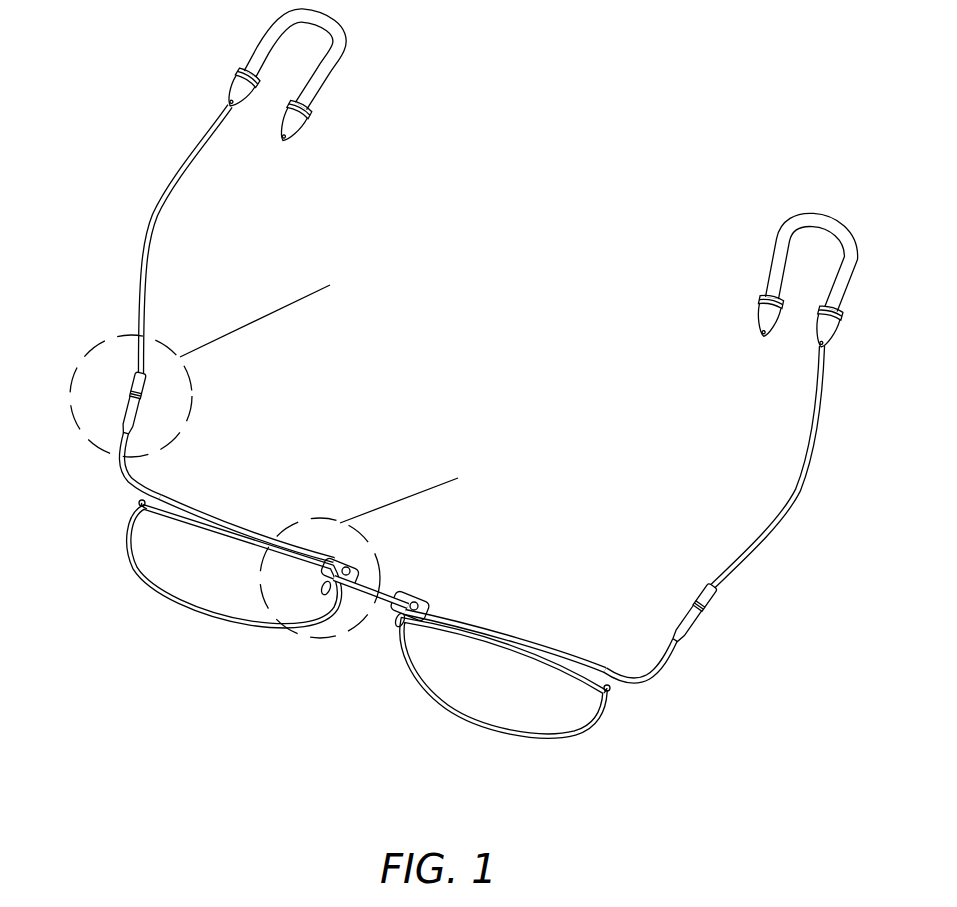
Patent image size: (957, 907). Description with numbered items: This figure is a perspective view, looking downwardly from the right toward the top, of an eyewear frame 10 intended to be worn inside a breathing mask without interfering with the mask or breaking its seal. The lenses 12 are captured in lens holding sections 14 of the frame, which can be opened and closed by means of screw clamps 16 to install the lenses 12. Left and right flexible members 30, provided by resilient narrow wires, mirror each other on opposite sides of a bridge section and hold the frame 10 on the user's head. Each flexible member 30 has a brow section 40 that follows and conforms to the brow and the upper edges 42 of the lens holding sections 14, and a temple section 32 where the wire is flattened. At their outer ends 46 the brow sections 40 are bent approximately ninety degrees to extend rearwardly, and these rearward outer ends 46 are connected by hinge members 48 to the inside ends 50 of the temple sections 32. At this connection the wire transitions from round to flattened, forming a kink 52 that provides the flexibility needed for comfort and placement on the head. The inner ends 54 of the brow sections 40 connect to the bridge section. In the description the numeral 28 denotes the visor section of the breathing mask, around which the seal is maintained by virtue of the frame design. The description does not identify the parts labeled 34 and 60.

The eyewear frame 10 is at (457, 403).
The lenses 12 is at (370, 645).
The lens holding sections 14 is at (370, 645).
The screw clamps 16 is at (133, 509).
The visor section 28 is at (378, 599).
The flexible members 30 is at (473, 346).
The temple sections 32 is at (147, 248).
The hinge pin 34 is at (378, 578).
The brow sections 40 is at (394, 562).
The upper edges 42 is at (394, 562).
The outer ends 46 is at (122, 466).
The hinge members 48 is at (138, 420).
The inside ends 50 is at (424, 465).
The kink 52 is at (142, 378).
The inner ends 54 is at (408, 567).
The ear hook earpiece 60 is at (346, 62).